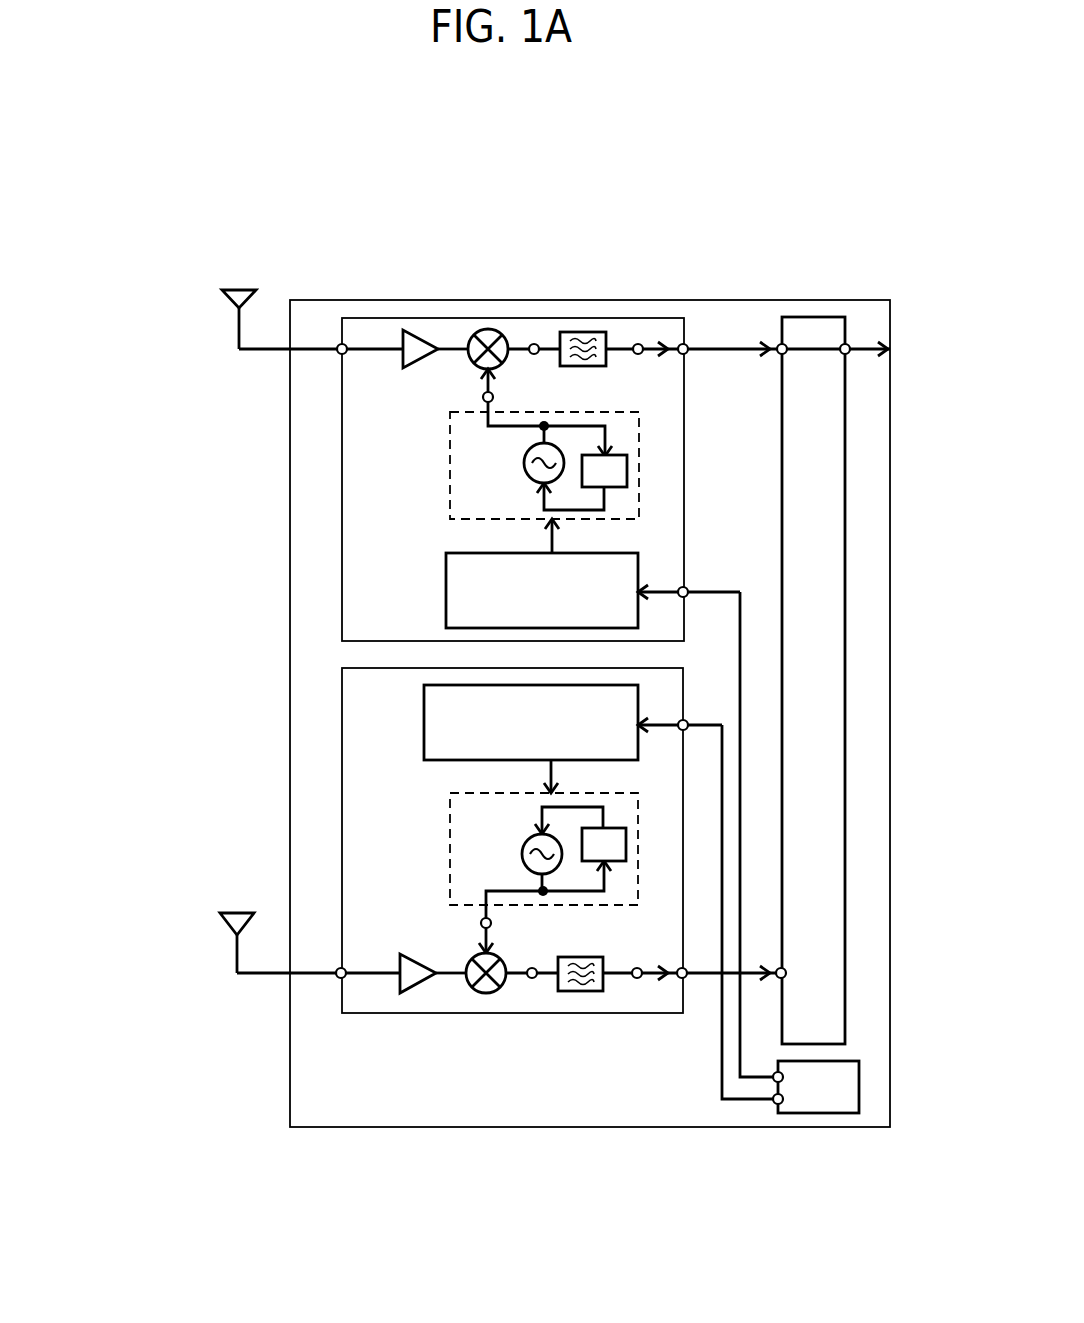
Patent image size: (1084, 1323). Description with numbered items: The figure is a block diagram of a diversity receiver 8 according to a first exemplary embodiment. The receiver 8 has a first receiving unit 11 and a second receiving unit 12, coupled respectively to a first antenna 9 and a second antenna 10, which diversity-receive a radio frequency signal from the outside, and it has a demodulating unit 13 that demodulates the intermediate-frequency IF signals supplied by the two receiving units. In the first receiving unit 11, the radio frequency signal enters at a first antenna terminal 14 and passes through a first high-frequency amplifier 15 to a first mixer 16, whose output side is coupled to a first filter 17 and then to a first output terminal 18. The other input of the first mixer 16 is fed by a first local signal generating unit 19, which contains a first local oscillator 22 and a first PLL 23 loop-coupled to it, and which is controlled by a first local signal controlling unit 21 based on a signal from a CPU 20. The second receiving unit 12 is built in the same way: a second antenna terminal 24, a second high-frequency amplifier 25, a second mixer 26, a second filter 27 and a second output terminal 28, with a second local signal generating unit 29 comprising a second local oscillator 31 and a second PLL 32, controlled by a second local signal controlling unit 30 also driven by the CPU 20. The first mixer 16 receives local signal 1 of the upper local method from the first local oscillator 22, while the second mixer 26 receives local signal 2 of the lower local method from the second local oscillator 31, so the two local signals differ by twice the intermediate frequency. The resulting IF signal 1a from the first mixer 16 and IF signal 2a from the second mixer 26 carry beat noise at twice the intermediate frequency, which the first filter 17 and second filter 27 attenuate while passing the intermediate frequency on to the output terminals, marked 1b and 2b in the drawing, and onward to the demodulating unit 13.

The local signal 1 is at (482, 399).
The IF signal 1a is at (535, 343).
The first filter output node 1b is at (639, 343).
The local signal 2 is at (481, 921).
The IF signal 2a is at (532, 979).
The second filter output node 2b is at (637, 979).
The receiver 8 is at (838, 285).
The first antenna 9 is at (238, 288).
The second antenna 10 is at (223, 923).
The first receiving unit 11 is at (342, 504).
The second receiving unit 12 is at (342, 720).
The demodulating unit 13 is at (800, 317).
The first antenna terminal 14 is at (340, 342).
The first high-frequency amplifier 15 is at (407, 332).
The first mixer 16 is at (484, 329).
The first filter 17 is at (585, 332).
The first output terminal 18 is at (685, 343).
The first local signal generating unit 19 is at (518, 443).
The CPU 20 is at (823, 1115).
The first local signal controlling unit 21 is at (446, 590).
The first local oscillator 22 is at (527, 471).
The first PLL 23 is at (622, 455).
The second antenna terminal 24 is at (338, 977).
The second high-frequency amplifier 25 is at (420, 988).
The second mixer 26 is at (488, 993).
The second filter 27 is at (579, 992).
The second output terminal 28 is at (683, 978).
The second local signal generating unit 29 is at (516, 871).
The second local signal controlling unit 30 is at (422, 722).
The second local oscillator 31 is at (525, 848).
The second PLL 32 is at (618, 865).